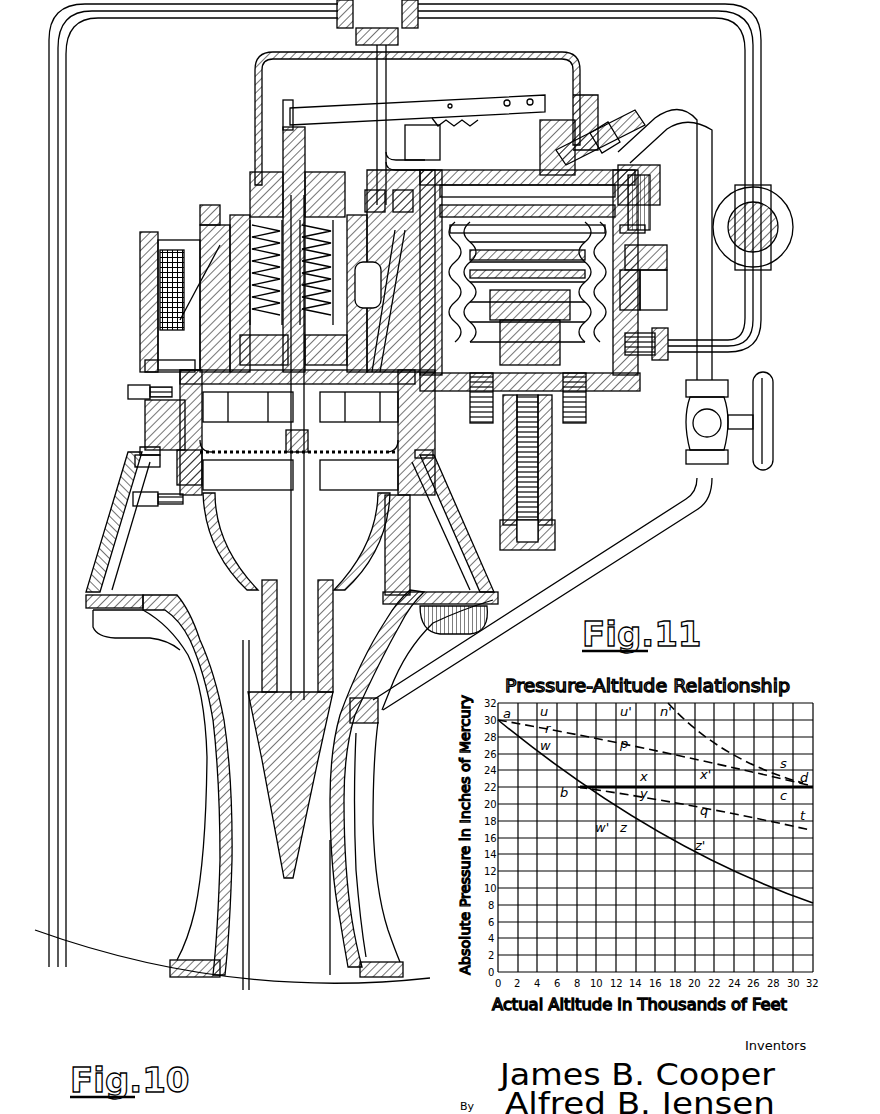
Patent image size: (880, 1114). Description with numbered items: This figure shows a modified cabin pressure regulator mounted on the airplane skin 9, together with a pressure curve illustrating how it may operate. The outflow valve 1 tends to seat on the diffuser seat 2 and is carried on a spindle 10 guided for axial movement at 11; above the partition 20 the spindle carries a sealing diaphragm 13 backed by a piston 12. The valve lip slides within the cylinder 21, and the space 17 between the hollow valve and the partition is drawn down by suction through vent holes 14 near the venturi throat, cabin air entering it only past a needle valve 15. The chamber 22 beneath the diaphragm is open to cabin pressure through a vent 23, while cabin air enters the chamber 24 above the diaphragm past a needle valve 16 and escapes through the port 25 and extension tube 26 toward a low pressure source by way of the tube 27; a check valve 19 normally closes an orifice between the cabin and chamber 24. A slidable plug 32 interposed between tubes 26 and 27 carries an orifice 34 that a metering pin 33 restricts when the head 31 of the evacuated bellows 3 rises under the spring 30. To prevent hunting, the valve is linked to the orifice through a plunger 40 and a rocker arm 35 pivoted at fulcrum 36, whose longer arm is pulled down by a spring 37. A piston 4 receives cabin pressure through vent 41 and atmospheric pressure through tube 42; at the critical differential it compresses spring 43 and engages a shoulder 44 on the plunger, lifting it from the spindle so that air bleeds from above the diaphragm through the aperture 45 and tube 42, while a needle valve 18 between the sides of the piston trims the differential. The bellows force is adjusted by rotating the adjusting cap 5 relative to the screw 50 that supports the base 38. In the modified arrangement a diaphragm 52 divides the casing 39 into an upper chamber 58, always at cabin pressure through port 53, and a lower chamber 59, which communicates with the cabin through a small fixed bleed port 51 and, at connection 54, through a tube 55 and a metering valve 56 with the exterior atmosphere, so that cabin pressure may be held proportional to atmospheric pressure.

The valve 1 is at (282, 735).
The diffuser seat 2 is at (248, 648).
The evacuated Sylphon bellows 3 is at (638, 312).
The piston 4 is at (160, 330).
The adjusting cap 5 is at (553, 520).
The skin of the airplane 9 is at (100, 955).
The spindle 10 is at (210, 643).
The guide 11 is at (298, 532).
The piston 12 is at (236, 448).
The sealing diaphragm 13 is at (430, 455).
The vent holes 14 is at (238, 680).
The needle valve 15 is at (133, 465).
The needle valve 16 is at (130, 383).
The space 17 is at (405, 682).
The needle valve 18 is at (200, 230).
The check valve 19 is at (307, 432).
The partition 20 is at (350, 490).
The cylinder 21 is at (118, 528).
The chamber 22 is at (248, 475).
The vent 23 is at (145, 447).
The chamber 24 is at (359, 407).
The port 25 is at (428, 352).
The extension tube 26 is at (415, 150).
The outlet tube 27 is at (690, 110).
The spring 30 is at (445, 290).
The bellows head 31 is at (650, 216).
The slidable plug 32 is at (560, 58).
The metering pin 33 is at (562, 140).
The orifice 34 is at (578, 104).
The rocker arm 35 is at (328, 108).
The fulcrum 36 is at (507, 100).
The spring 37 is at (430, 118).
The base 38 is at (580, 368).
The casing 39 is at (600, 370).
The plunger 40 is at (283, 145).
The vent 41 is at (150, 345).
The tube 42 is at (66, 130).
The spring 43 is at (235, 275).
The shoulder 44 is at (392, 330).
The aperture 45 is at (341, 347).
The screw 50 is at (520, 480).
The bleed port 51 is at (640, 300).
The diaphragm 52 is at (652, 190).
The port 53 is at (638, 112).
The connection 54 is at (640, 358).
The tube 55 is at (750, 345).
The metering valve 56 is at (770, 235).
The upper chamber 58 is at (635, 168).
The lower chamber 59 is at (630, 262).